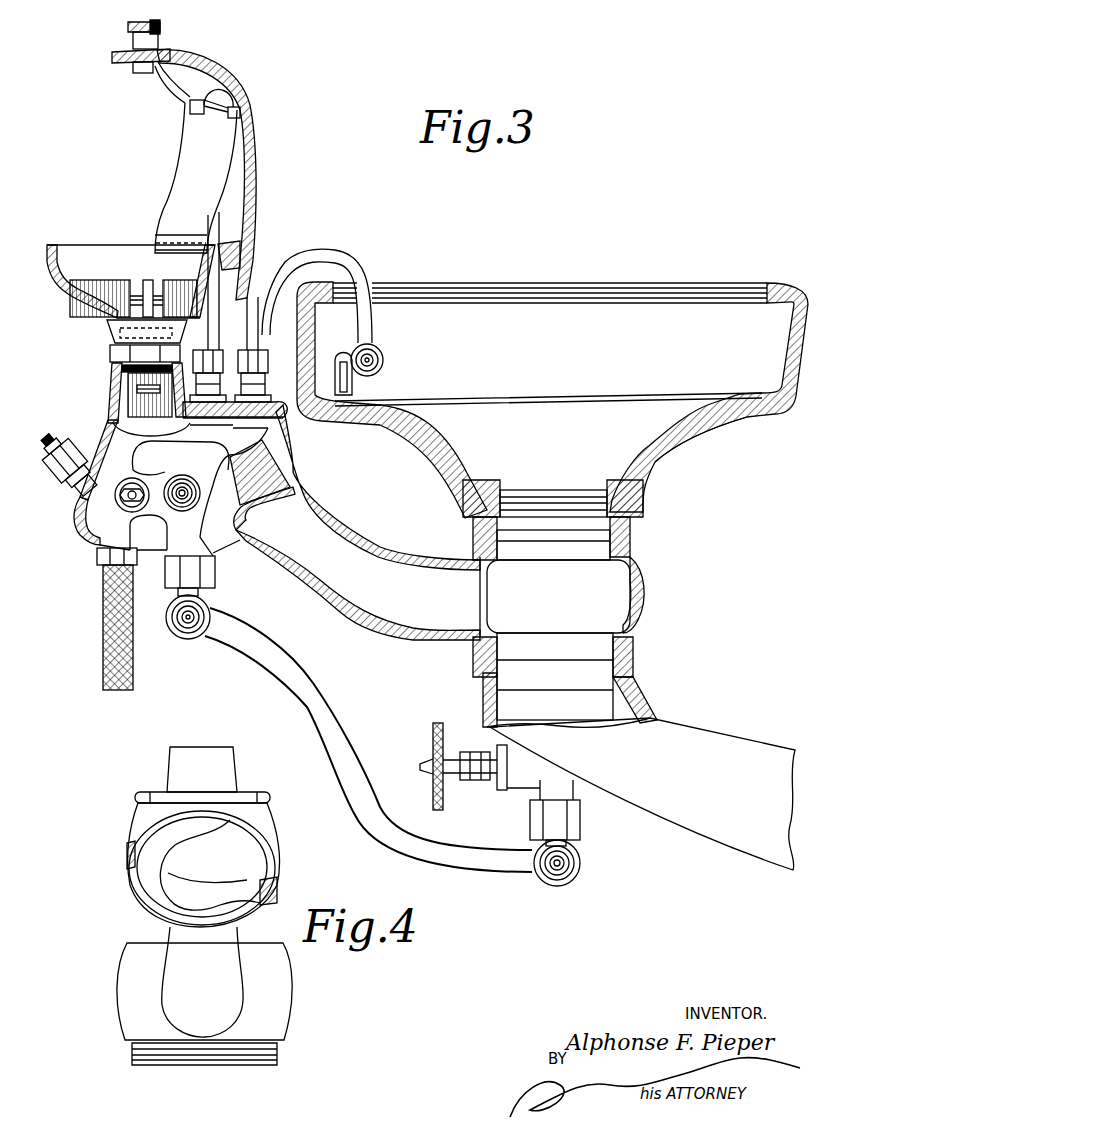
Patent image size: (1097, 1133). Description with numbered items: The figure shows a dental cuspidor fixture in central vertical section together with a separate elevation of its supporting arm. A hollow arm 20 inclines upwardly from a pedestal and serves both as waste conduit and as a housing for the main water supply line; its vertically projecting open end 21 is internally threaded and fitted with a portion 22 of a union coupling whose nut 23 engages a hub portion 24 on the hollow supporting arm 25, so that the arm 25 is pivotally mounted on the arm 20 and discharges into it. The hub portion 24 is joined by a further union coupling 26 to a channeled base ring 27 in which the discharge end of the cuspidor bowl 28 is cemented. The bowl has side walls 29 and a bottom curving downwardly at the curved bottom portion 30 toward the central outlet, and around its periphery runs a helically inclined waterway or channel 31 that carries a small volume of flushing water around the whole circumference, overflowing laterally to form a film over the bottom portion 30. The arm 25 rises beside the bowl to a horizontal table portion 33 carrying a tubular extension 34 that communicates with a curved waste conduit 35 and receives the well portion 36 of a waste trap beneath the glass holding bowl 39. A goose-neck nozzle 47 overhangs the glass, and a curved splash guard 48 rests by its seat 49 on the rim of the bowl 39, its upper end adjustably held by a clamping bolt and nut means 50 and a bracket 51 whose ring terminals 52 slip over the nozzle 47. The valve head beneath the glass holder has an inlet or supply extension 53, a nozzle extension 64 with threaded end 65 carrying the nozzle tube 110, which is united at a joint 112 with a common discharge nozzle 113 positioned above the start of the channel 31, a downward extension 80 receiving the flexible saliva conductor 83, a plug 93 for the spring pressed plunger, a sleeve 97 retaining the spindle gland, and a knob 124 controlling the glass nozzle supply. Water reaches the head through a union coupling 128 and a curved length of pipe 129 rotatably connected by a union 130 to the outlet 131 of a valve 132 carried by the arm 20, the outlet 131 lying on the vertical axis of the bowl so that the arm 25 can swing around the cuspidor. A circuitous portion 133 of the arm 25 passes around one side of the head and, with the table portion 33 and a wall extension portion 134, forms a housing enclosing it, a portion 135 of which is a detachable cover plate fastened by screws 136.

In FIG. 3, the hollow arm 20 is at (740, 745).
In FIG. 3, the vertically projecting open end 21 is at (485, 693).
In FIG. 3, the union coupling portion 22 is at (587, 680).
In FIG. 3, the union coupling nut 23 is at (630, 665).
In FIG. 3, the hub portion 24 is at (640, 600).
In FIG. 4, the hub portion 24 is at (290, 998).
In FIG. 3, the hollow supporting arm 25 is at (367, 605).
In FIG. 4, the hollow supporting arm 25 is at (185, 952).
In FIG. 3, the union coupling 26 is at (632, 540).
In FIG. 3, the channeled base ring 27 is at (640, 507).
In FIG. 3, the cuspidor bowl 28 is at (525, 278).
In FIG. 3, the side walls 29 is at (627, 300).
In FIG. 3, the curved bottom portion 30 is at (640, 462).
In FIG. 3, the waterway or channel 31 is at (767, 392).
In FIG. 3, the horizontal table portion 33 is at (292, 393).
In FIG. 4, the horizontal table portion 33 is at (250, 795).
In FIG. 3, the tubular extension 34 is at (108, 388).
In FIG. 4, the tubular extension 34 is at (170, 762).
In FIG. 3, the curved waste conduit 35 is at (113, 427).
In FIG. 3, the well portion of waste trap 36 is at (110, 354).
In FIG. 3, the glass holding bowl 39 is at (75, 245).
In FIG. 3, the nozzle or goose neck 47 is at (222, 207).
In FIG. 3, the splash guard 48 is at (256, 167).
In FIG. 3, the seat 49 is at (241, 244).
In FIG. 3, the clamping bolt and nut means 50 is at (160, 38).
In FIG. 3, the bracket 51 is at (175, 74).
In FIG. 3, the ring terminals 52 is at (200, 114).
In FIG. 3, the inlet or supply extension 53 is at (210, 548).
In FIG. 3, the nozzle extension 64 is at (200, 451).
In FIG. 3, the threaded end 65 is at (253, 428).
In FIG. 3, the downward extension 80 is at (118, 548).
In FIG. 3, the flexible conductor 83 is at (103, 620).
In FIG. 3, the plug 93 is at (128, 486).
In FIG. 3, the sleeve 97 is at (62, 490).
In FIG. 3, the nozzle tube 110 is at (335, 241).
In FIG. 3, the joint 112 is at (382, 355).
In FIG. 3, the common discharge nozzle 113 is at (356, 390).
In FIG. 3, the fingerpiece or knob 124 is at (185, 466).
In FIG. 3, the union coupling 128 is at (215, 578).
In FIG. 3, the curved length of pipe 129 is at (280, 670).
In FIG. 3, the union 130 is at (580, 820).
In FIG. 3, the valve outlet 131 is at (538, 790).
In FIG. 3, the valve 132 is at (495, 773).
In FIG. 3, the circuitous portion 133 is at (250, 512).
In FIG. 4, the circuitous portion 133 is at (140, 880).
In FIG. 4, the wall extension portion 134 is at (273, 835).
In FIG. 3, the cover plate 135 is at (100, 540).
In FIG. 3, the screws 136 is at (86, 525).